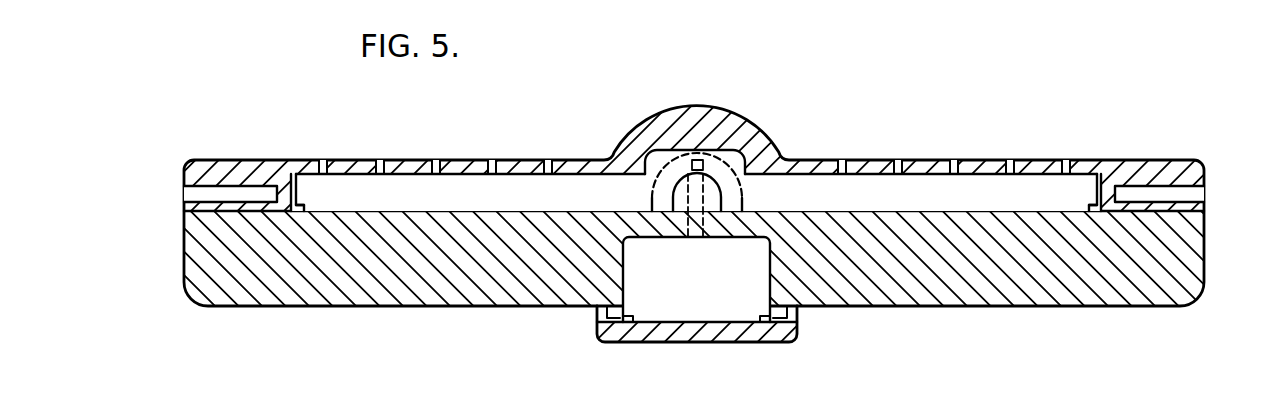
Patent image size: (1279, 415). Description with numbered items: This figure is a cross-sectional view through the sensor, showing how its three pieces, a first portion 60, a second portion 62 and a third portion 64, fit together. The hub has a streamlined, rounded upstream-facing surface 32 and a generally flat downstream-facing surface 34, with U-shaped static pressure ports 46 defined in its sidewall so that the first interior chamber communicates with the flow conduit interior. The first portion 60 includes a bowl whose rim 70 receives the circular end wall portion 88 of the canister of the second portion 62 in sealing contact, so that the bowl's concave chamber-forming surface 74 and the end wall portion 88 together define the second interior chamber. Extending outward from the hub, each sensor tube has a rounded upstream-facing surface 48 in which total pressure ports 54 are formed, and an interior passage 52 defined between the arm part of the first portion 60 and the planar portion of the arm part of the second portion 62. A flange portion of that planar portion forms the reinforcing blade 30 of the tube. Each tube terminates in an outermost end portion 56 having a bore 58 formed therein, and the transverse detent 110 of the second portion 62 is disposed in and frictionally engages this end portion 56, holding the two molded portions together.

The reinforcing blade 30 is at (300, 293).
The upstream-facing surface 32 is at (633, 128).
The downstream-facing surface 34 is at (727, 343).
The static pressure port 46 is at (590, 316).
The upstream-facing surface 48 is at (410, 158).
The interior passage 52 is at (477, 207).
The total pressure port 54 is at (1067, 158).
The end portion 56 is at (223, 150).
The bore 58 is at (188, 193).
The first portion 60 is at (776, 150).
The second portion 62 is at (222, 284).
The third portion 64 is at (779, 342).
The rim 70 is at (637, 210).
The chamber-forming surface 74 is at (681, 152).
The end wall portion 88 is at (637, 238).
The transverse detent 110 is at (303, 206).